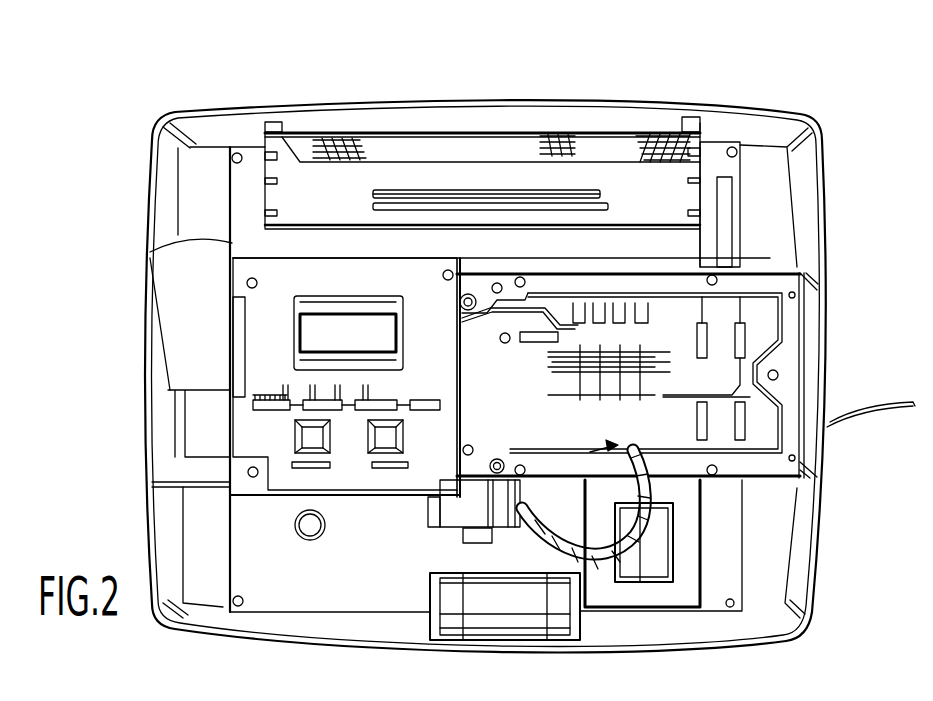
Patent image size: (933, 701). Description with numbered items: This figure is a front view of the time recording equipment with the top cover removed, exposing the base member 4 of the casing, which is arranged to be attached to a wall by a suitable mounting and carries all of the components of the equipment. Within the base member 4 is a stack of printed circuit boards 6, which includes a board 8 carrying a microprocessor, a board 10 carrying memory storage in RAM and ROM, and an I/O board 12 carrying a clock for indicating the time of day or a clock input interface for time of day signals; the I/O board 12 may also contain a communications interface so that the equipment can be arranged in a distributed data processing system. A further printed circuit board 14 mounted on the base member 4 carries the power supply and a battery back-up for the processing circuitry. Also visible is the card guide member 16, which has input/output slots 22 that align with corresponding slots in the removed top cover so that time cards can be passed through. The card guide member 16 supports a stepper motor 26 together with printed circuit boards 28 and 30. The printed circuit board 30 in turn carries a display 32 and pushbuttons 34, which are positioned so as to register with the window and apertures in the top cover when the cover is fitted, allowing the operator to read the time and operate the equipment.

The base member 4 is at (805, 530).
The stack of printed circuit boards 6 is at (497, 128).
The board carrying a microprocessor 8 is at (482, 159).
The board carrying memory storage 10 is at (482, 159).
The I/O board 12 is at (375, 150).
The further printed circuit board 14 is at (695, 562).
The card guide member 16 is at (770, 272).
The input/output slots 22 is at (153, 392).
The stepper motor 26 is at (456, 513).
The printed circuit board 28 is at (778, 392).
The printed circuit board 30 is at (320, 270).
The display 32 is at (399, 331).
The pushbuttons 34 is at (372, 442).